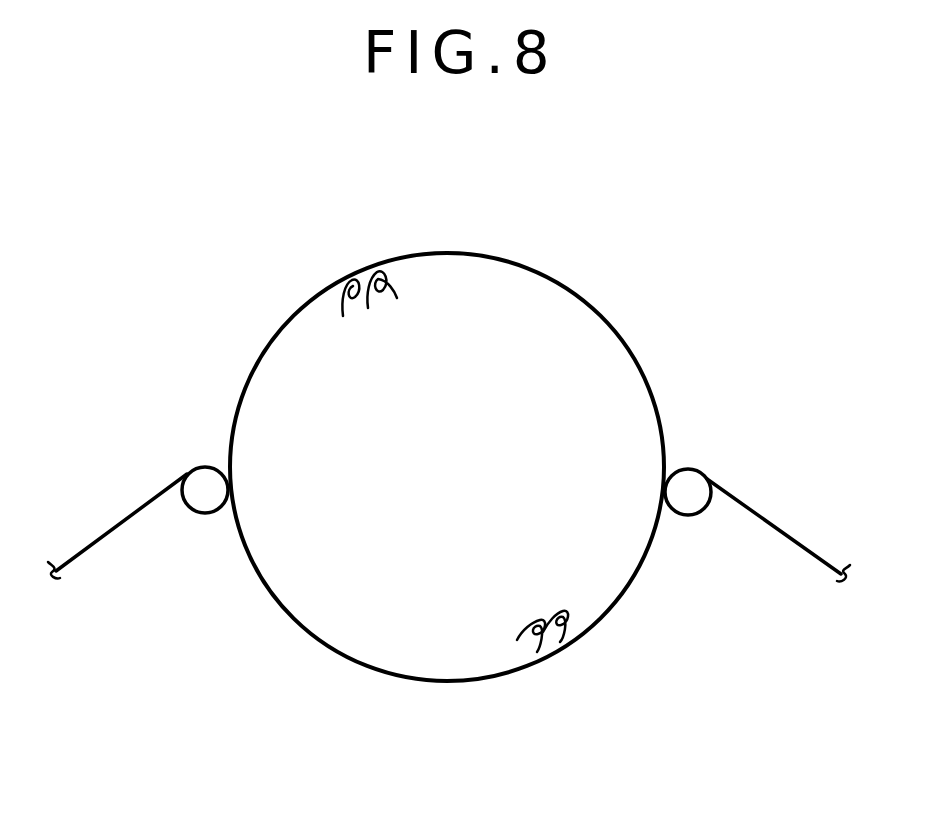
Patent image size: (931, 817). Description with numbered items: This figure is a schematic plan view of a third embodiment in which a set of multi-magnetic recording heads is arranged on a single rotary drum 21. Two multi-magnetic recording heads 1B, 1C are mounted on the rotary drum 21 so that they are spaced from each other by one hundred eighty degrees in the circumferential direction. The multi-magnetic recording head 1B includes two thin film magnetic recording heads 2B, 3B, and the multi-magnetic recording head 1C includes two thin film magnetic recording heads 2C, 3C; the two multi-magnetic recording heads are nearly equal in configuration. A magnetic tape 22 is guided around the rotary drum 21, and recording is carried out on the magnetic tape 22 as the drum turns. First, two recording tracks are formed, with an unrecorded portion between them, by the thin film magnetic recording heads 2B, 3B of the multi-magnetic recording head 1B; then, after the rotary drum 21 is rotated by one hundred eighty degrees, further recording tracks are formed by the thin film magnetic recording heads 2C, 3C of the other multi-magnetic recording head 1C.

The rotary drum 21 is at (550, 320).
The magnetic tape 22 is at (127, 518).
The multi-magnetic recording head 1C is at (310, 244).
The thin film magnetic recording head 2C is at (340, 302).
The thin film magnetic recording head 3C is at (388, 281).
The multi-magnetic recording head 1B is at (585, 681).
The thin film magnetic recording head 2B is at (575, 621).
The thin film magnetic recording head 3B is at (518, 645).